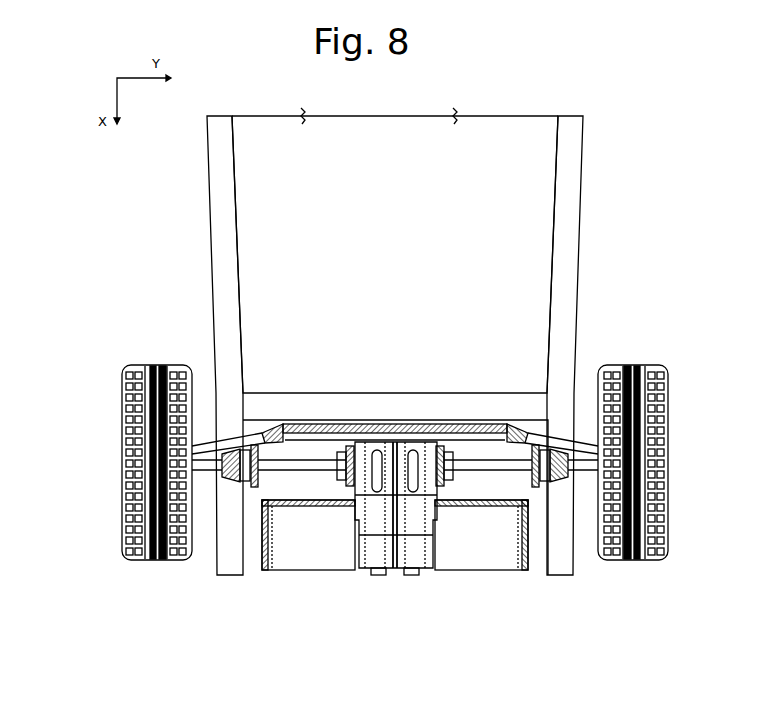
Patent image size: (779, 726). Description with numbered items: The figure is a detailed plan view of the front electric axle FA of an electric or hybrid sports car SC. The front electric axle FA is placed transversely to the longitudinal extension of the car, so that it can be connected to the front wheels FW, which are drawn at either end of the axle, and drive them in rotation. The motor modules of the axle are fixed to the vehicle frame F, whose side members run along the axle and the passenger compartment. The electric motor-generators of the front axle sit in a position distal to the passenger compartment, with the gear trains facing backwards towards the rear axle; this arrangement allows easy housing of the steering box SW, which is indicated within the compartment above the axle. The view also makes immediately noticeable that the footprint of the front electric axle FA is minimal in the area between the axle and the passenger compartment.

The vehicle frame F is at (567, 262).
The sports car SC is at (186, 239).
The steering box SW is at (453, 354).
The front electric axle FA is at (416, 596).
The front wheels FW is at (122, 447).